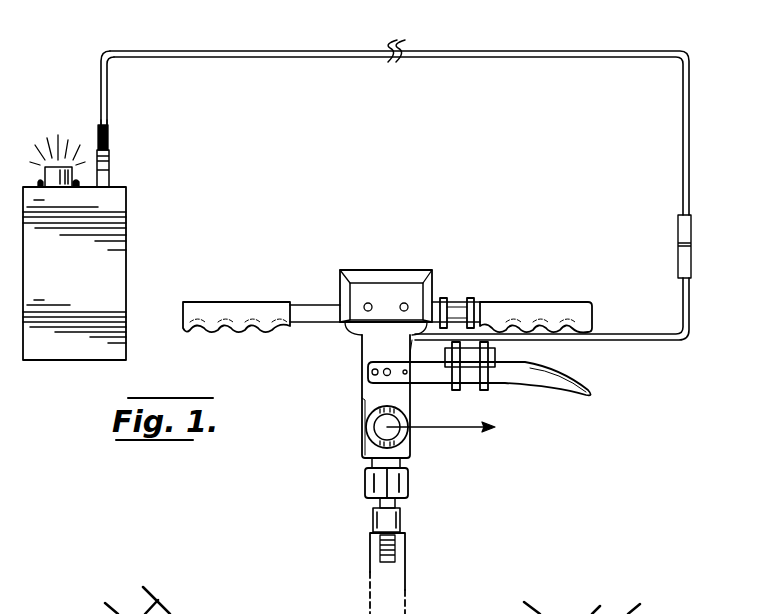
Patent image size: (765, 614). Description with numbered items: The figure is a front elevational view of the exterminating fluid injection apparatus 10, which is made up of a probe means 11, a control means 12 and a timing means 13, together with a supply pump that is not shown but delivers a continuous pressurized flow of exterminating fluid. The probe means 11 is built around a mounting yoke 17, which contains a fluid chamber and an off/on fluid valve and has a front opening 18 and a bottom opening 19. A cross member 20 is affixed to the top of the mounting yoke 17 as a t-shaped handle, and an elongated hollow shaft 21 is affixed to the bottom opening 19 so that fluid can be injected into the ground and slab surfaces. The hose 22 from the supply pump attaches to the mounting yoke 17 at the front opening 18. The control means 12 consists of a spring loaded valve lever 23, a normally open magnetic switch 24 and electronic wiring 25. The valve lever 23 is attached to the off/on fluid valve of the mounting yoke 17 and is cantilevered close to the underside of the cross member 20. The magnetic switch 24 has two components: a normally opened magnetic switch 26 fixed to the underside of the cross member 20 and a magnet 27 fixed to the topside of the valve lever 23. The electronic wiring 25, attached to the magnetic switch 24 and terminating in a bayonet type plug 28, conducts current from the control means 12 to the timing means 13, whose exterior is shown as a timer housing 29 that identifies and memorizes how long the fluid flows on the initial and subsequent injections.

The apparatus 10 is at (548, 38).
The probe means 11 is at (396, 573).
The control means 12 is at (443, 418).
The timing means 13 is at (129, 240).
The mounting yoke 17 is at (372, 270).
The front opening 18 is at (372, 427).
The bottom opening 19 is at (400, 465).
The cross member 20 is at (310, 302).
The elongated hollow shaft 21 is at (370, 596).
The hose 22 is at (479, 367).
The spring loaded valve lever 23 is at (528, 380).
The magnetic switch 24 is at (527, 266).
The electronic wiring 25 is at (578, 58).
The normally opened magnetic switch 26 is at (452, 302).
The magnet 27 is at (476, 360).
The bayonet type plug 28 is at (148, 200).
The timer housing 29 is at (126, 275).